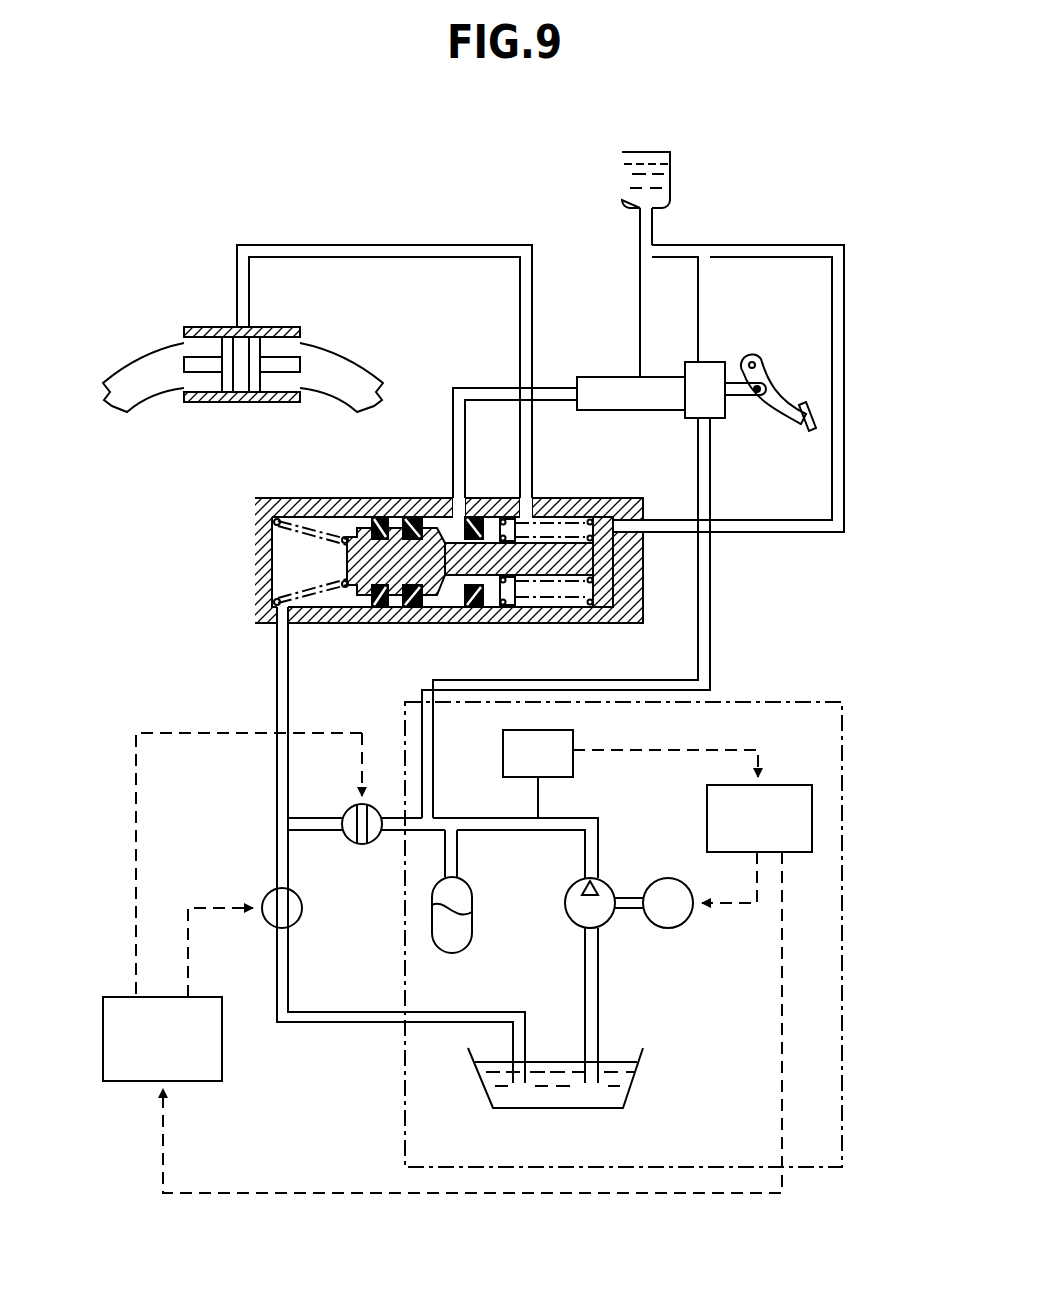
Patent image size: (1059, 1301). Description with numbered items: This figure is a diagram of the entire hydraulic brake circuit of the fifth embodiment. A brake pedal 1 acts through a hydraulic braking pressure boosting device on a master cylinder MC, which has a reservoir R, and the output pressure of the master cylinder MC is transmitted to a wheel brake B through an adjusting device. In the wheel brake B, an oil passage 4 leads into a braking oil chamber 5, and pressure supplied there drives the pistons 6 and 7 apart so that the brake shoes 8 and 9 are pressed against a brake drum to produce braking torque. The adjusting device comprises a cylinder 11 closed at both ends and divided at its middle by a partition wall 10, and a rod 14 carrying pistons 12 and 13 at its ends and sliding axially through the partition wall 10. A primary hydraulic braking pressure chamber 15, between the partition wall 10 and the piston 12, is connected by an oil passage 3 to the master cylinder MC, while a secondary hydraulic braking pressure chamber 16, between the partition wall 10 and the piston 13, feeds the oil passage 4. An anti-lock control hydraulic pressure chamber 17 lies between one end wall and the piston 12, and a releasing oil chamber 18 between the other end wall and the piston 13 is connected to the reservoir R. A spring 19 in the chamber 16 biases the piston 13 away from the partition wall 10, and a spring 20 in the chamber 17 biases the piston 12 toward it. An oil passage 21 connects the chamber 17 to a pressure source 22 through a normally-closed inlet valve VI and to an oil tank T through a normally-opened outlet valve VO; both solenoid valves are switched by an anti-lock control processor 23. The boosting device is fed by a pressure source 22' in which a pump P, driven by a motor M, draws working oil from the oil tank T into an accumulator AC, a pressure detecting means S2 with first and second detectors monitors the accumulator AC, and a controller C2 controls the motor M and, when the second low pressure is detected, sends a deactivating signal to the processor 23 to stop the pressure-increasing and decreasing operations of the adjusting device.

The brake pedal 1 is at (810, 432).
The oil passage 3 is at (455, 419).
The oil passage 4 is at (372, 255).
The braking oil chamber 5 is at (242, 377).
The piston 6 is at (225, 397).
The piston 7 is at (257, 397).
The brake shoe 8 is at (153, 368).
The brake shoe 9 is at (330, 368).
The partition wall 10 is at (472, 598).
The cylinder 11 is at (340, 498).
The piston 12 is at (395, 600).
The piston 13 is at (603, 598).
The rod 14 is at (537, 566).
The primary hydraulic braking pressure chamber 15 is at (447, 527).
The secondary hydraulic braking pressure chamber 16 is at (557, 521).
The anti-lock control hydraulic pressure chamber 17 is at (288, 548).
The releasing oil chamber 18 is at (628, 506).
The spring 19 is at (590, 520).
The spring 20 is at (275, 610).
The oil passage 21 is at (250, 585).
The pressure source 22 is at (727, 425).
The pressure source 22' is at (573, 934).
The anti-lock control processor 23 is at (180, 1056).
The wheel brake B is at (204, 317).
The master cylinder MC is at (593, 387).
The reservoir R is at (670, 182).
The pressure detecting means S2 is at (552, 771).
The controller C2 is at (774, 838).
The inlet valve VI is at (360, 852).
The outlet valve VO is at (297, 920).
The accumulator AC is at (472, 925).
The pump P is at (567, 915).
The motor M is at (668, 928).
The oil tank T is at (646, 1078).